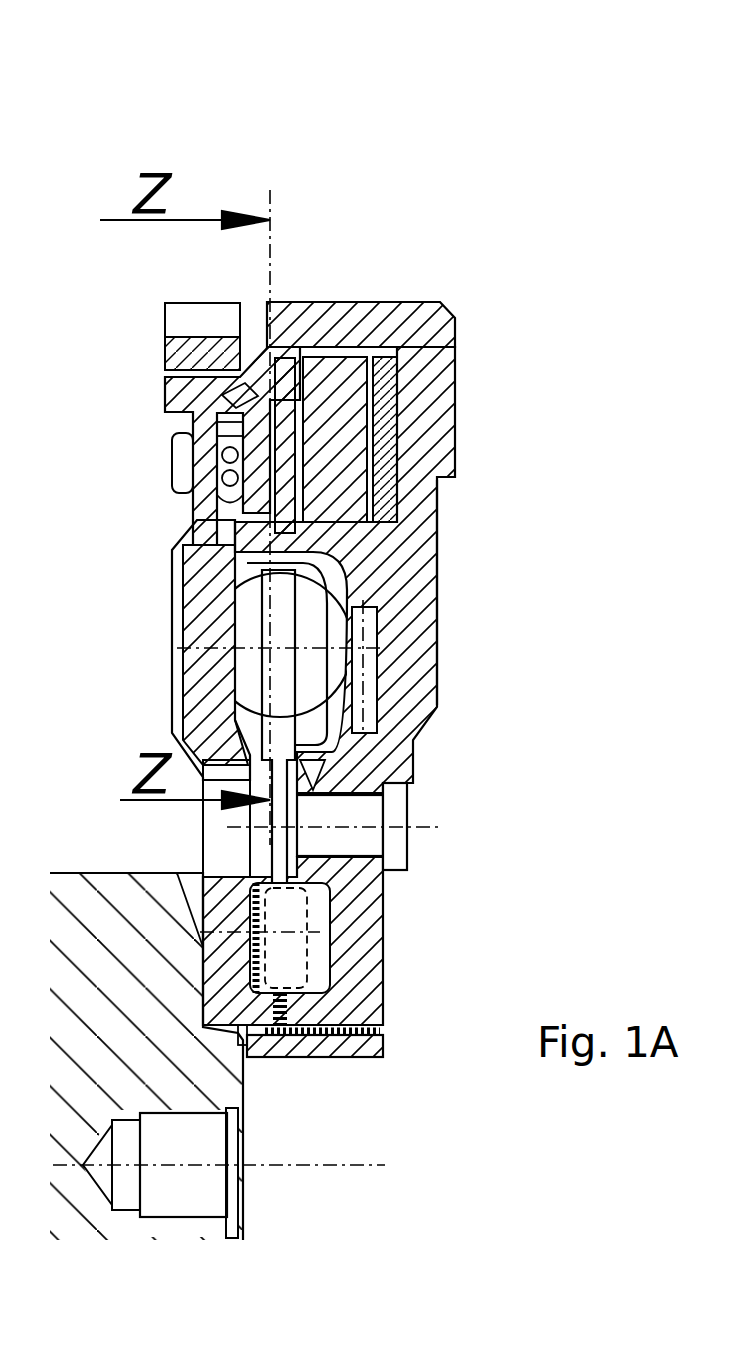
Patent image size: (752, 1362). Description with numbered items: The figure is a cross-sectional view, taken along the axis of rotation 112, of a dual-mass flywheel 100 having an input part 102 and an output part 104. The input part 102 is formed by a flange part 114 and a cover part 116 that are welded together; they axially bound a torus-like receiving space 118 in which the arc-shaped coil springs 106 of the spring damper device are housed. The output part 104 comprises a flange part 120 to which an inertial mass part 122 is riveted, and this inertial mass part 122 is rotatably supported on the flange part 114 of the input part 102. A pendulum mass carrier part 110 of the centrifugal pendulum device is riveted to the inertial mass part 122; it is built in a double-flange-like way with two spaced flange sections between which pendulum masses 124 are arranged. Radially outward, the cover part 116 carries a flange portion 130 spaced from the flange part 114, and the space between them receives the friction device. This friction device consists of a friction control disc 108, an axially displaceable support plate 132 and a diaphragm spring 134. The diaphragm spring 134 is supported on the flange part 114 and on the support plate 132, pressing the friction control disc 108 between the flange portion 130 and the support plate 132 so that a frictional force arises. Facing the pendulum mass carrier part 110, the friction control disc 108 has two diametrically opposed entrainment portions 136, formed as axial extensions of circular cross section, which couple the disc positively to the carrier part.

The dual-mass flywheel 100 is at (226, 124).
The input part 102 is at (150, 462).
The output part 104 is at (470, 515).
The arc-shaped coil spring 106 is at (253, 715).
The friction control disc 108 is at (168, 347).
The pendulum mass carrier part 110 is at (327, 457).
The axis of rotation 112 is at (310, 1165).
The flange part 114 is at (172, 952).
The cover part 116 is at (337, 608).
The receiving space 118 is at (172, 650).
The flange part 120 is at (337, 757).
The inertial mass part 122 is at (413, 665).
The pendulum mass 124 is at (333, 367).
The flange portion 130 is at (232, 400).
The support plate 132 is at (228, 430).
The diaphragm spring 134 is at (198, 465).
The entrainment portion 136 is at (290, 350).